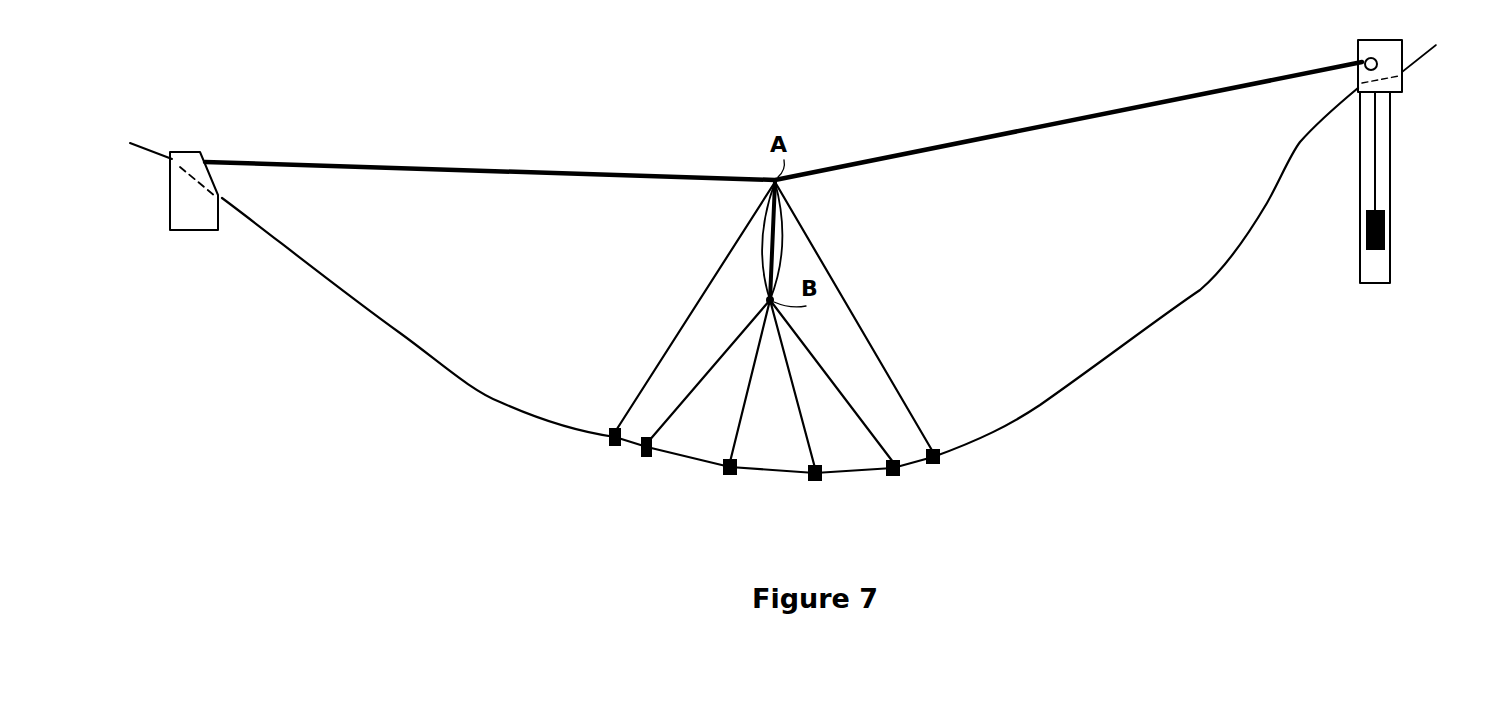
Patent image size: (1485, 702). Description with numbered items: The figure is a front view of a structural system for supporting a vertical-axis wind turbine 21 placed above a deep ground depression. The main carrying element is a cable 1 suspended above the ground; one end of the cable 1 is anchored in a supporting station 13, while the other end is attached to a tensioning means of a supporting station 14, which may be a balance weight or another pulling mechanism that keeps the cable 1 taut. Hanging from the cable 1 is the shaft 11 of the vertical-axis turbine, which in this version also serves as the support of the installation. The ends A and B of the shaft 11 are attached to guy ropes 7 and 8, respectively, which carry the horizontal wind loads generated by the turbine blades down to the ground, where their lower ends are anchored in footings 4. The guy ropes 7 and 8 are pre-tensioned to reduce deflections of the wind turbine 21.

The cable 1 is at (1008, 128).
The supporting station 13 is at (177, 194).
The supporting station 14 is at (1405, 82).
The shaft of the vertical-axis turbine 11 is at (765, 255).
The vertical-axis wind turbine 21 is at (791, 238).
The guy ropes 7 is at (872, 335).
The guy ropes 8 is at (680, 400).
The footings 4 is at (940, 462).